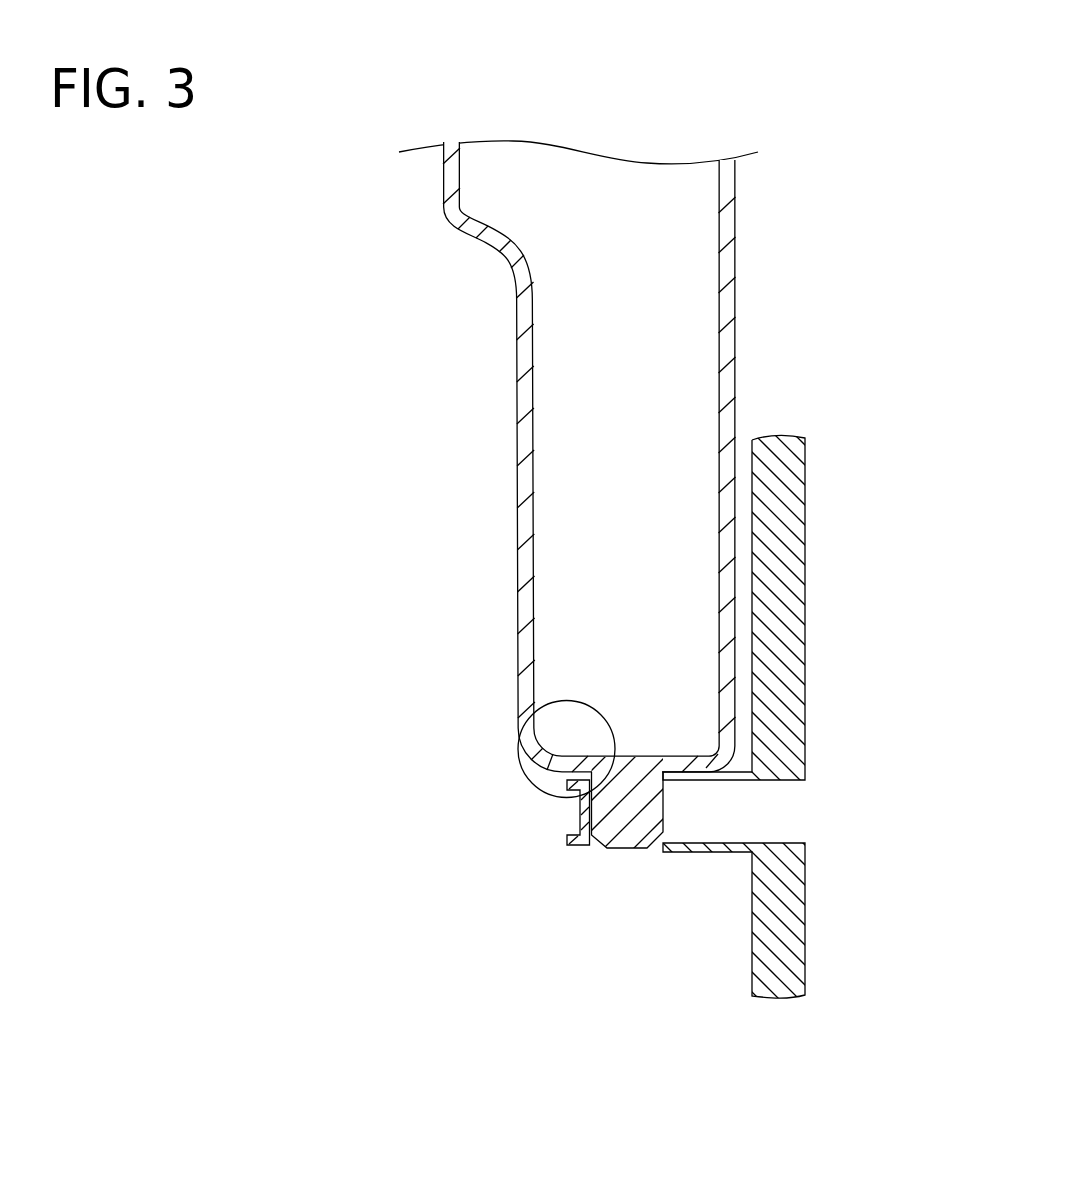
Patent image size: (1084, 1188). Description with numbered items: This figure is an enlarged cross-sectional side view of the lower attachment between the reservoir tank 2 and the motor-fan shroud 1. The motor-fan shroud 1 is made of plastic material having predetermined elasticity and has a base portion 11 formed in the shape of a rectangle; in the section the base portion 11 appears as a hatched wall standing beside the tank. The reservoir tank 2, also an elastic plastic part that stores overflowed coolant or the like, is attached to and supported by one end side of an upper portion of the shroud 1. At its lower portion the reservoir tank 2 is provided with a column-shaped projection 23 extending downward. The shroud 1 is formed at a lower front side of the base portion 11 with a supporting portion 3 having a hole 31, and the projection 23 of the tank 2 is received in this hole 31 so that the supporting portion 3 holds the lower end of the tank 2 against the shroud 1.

The motor-fan shroud 1 is at (818, 560).
The base portion 11 is at (795, 918).
The reservoir tank 2 is at (503, 377).
The projection 23 is at (619, 835).
The supporting portion 3 is at (562, 813).
The hole 31 is at (522, 702).